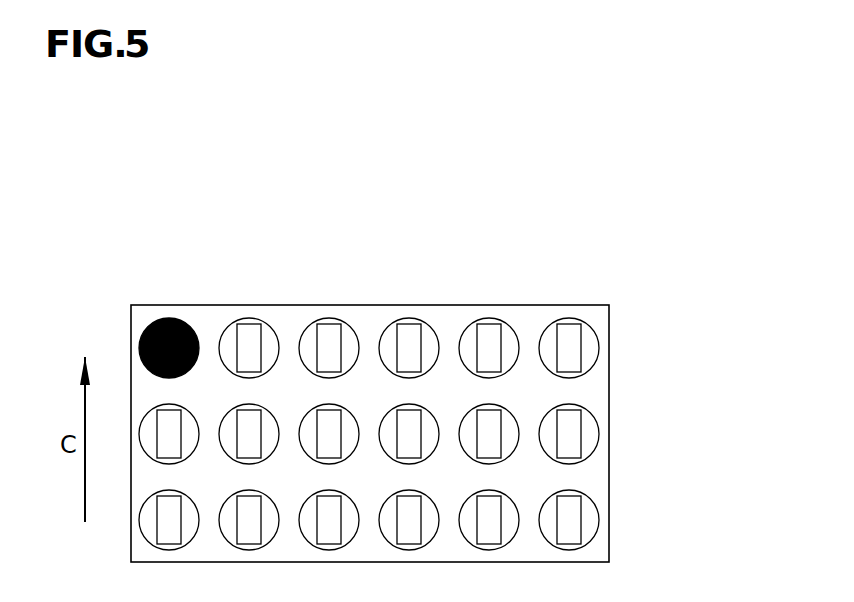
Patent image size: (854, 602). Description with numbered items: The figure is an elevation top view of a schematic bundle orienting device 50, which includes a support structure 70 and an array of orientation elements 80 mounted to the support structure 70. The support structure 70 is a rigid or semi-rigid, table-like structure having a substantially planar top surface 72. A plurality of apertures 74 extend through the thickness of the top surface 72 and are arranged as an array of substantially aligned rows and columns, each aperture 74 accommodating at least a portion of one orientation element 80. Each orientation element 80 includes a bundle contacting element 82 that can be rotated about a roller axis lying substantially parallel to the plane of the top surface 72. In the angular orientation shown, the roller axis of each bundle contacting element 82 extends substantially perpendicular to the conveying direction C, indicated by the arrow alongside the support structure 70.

The bundle orienting device 50 is at (712, 388).
The support structure 70 is at (202, 305).
The top surface 72 is at (294, 323).
The aperture 74 is at (550, 345).
The orientation element 80 is at (572, 317).
The bundle contacting element 82 is at (573, 338).